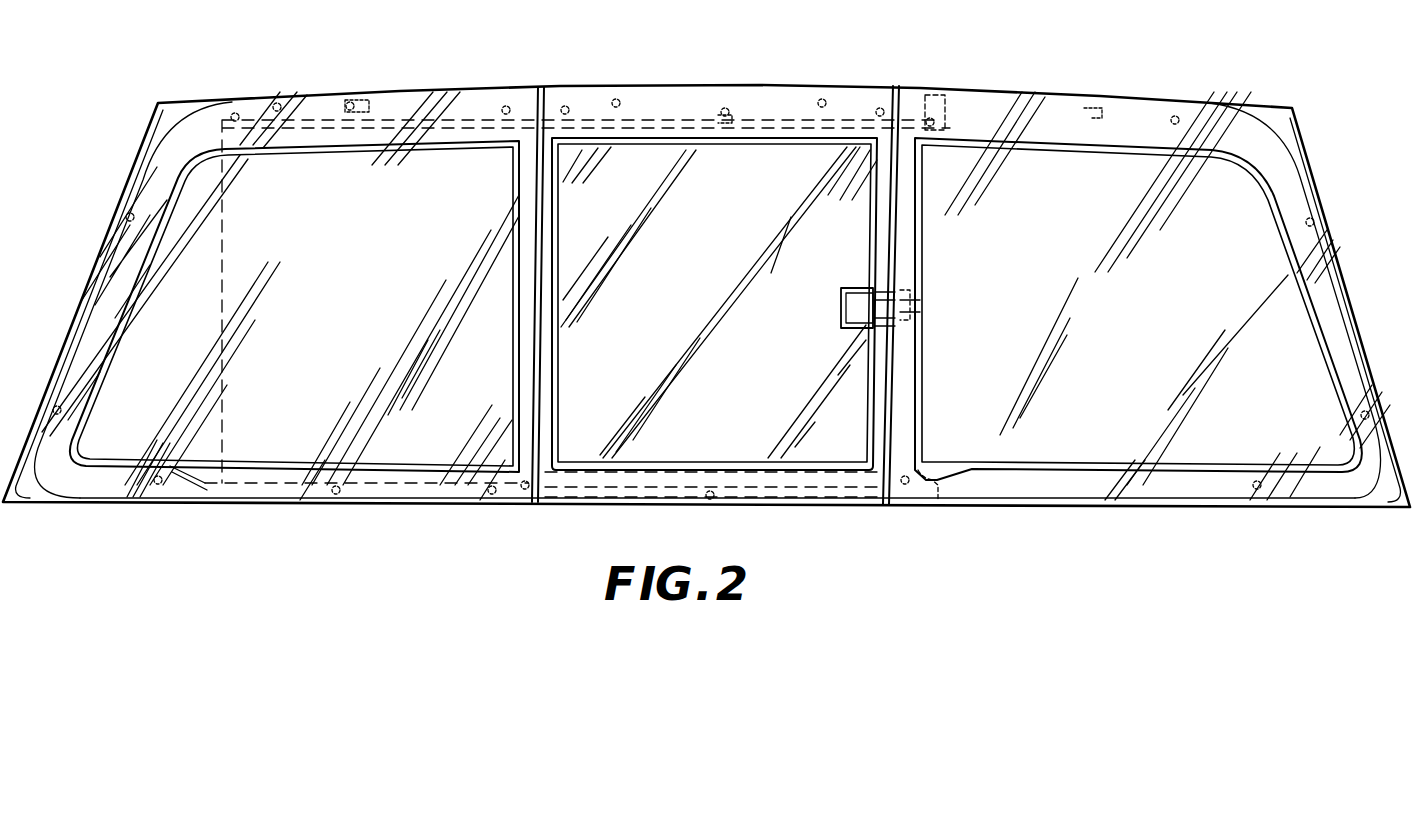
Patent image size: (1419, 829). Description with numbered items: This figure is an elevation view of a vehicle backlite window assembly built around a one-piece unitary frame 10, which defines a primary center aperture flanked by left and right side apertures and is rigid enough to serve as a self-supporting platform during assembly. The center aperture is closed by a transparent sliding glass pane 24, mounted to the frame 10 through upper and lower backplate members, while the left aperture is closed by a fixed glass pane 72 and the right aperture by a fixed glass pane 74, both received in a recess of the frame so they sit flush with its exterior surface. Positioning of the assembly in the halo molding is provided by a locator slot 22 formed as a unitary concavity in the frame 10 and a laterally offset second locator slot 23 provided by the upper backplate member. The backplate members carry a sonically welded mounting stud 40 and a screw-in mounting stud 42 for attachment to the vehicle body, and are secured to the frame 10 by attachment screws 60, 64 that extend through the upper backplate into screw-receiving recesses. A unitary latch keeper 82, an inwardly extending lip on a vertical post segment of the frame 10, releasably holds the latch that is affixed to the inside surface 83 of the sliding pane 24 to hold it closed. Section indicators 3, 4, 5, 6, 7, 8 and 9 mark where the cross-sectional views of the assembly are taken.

The frame 10 is at (624, 82).
The locator slot 22 is at (1086, 112).
The second locator slot 23 is at (367, 98).
The sliding glass pane 24 is at (687, 297).
The mounting stud 40 is at (935, 120).
The screw-in mounting stud 42 is at (925, 470).
The attachment screw 60 is at (345, 114).
The attachment screw 64 is at (729, 110).
The fixed glass pane 72 is at (372, 297).
The fixed glass pane 74 is at (1172, 297).
The latch keeper 82 is at (917, 332).
The inside surface of slidable pane 83 is at (842, 293).
The section line 3- 3 is at (1128, 52).
The section line 4- 4 is at (958, 52).
The section line 5- 5 is at (396, 52).
The section line 6- 6 is at (760, 52).
The section line 7- 7 is at (1270, 233).
The section line 8- 8 is at (935, 435).
The section line 9- 9 is at (945, 335).